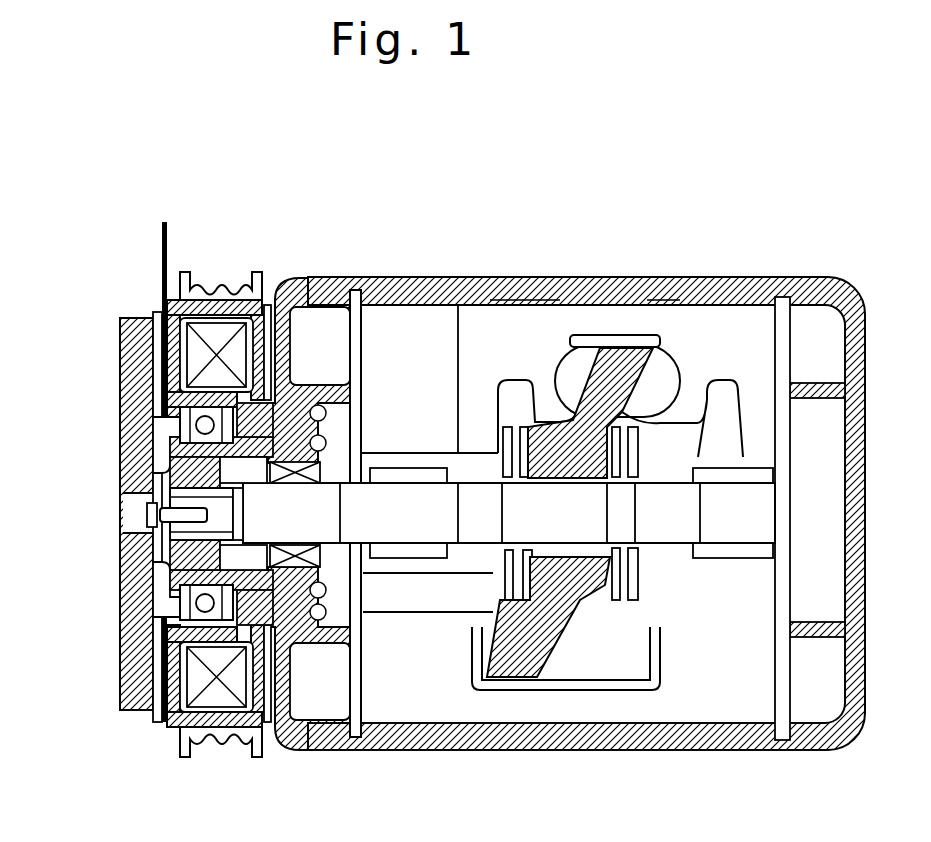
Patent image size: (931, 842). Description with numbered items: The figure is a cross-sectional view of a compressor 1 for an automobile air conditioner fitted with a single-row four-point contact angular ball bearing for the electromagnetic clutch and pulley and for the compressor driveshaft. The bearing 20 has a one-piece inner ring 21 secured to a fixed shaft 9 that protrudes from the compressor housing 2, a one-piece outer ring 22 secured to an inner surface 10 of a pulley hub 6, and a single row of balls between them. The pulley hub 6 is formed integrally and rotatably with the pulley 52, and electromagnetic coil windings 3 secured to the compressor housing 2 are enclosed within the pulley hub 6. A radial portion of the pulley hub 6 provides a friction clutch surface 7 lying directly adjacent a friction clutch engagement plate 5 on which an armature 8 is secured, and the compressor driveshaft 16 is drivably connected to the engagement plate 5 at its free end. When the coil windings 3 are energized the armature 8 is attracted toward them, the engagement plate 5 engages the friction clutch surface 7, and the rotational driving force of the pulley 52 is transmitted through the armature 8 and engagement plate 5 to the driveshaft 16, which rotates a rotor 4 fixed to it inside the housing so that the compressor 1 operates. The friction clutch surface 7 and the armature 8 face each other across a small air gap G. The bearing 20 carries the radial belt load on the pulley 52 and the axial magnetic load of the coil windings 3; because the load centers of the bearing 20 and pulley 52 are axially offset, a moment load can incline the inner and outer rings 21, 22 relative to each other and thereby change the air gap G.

The compressor 1 is at (644, 274).
The compressor housing 2 is at (442, 297).
The electromagnetic coil windings 3 is at (242, 335).
The compression mechanism / drive shaft eccentric 4 is at (540, 437).
The friction clutch engagement plate 5 is at (120, 483).
The pulley hub 6 is at (166, 288).
The friction clutch surface 7 is at (160, 311).
The armature 8 is at (150, 350).
The fixed shaft 9 is at (125, 470).
The inner surface 10 is at (133, 497).
The compressor driveshaft 16 is at (509, 513).
The bearing 20 is at (265, 397).
The inner ring 21 is at (180, 437).
The outer ring 22 is at (190, 410).
The pulley 52 is at (190, 287).
The air gap G is at (136, 231).